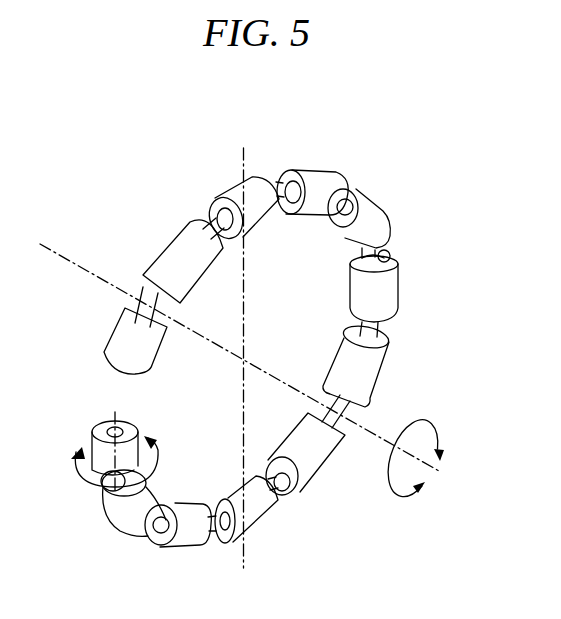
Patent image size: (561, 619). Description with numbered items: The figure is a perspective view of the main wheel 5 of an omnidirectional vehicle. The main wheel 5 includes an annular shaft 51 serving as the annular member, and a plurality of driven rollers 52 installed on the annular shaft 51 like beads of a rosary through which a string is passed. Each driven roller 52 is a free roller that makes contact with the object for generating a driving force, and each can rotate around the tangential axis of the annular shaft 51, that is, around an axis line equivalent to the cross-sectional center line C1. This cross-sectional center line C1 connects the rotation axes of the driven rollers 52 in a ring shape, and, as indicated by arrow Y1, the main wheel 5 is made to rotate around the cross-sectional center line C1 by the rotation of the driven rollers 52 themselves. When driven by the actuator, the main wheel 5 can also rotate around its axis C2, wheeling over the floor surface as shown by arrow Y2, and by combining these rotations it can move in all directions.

The main wheel 5 is at (386, 154).
The annular shaft 51 is at (207, 219).
The driven roller 52 is at (227, 188).
The cross-sectional center line C1 is at (115, 438).
The axis of the main wheel C2 is at (254, 369).
The arrow Y1 is at (160, 452).
The arrow Y2 is at (428, 425).